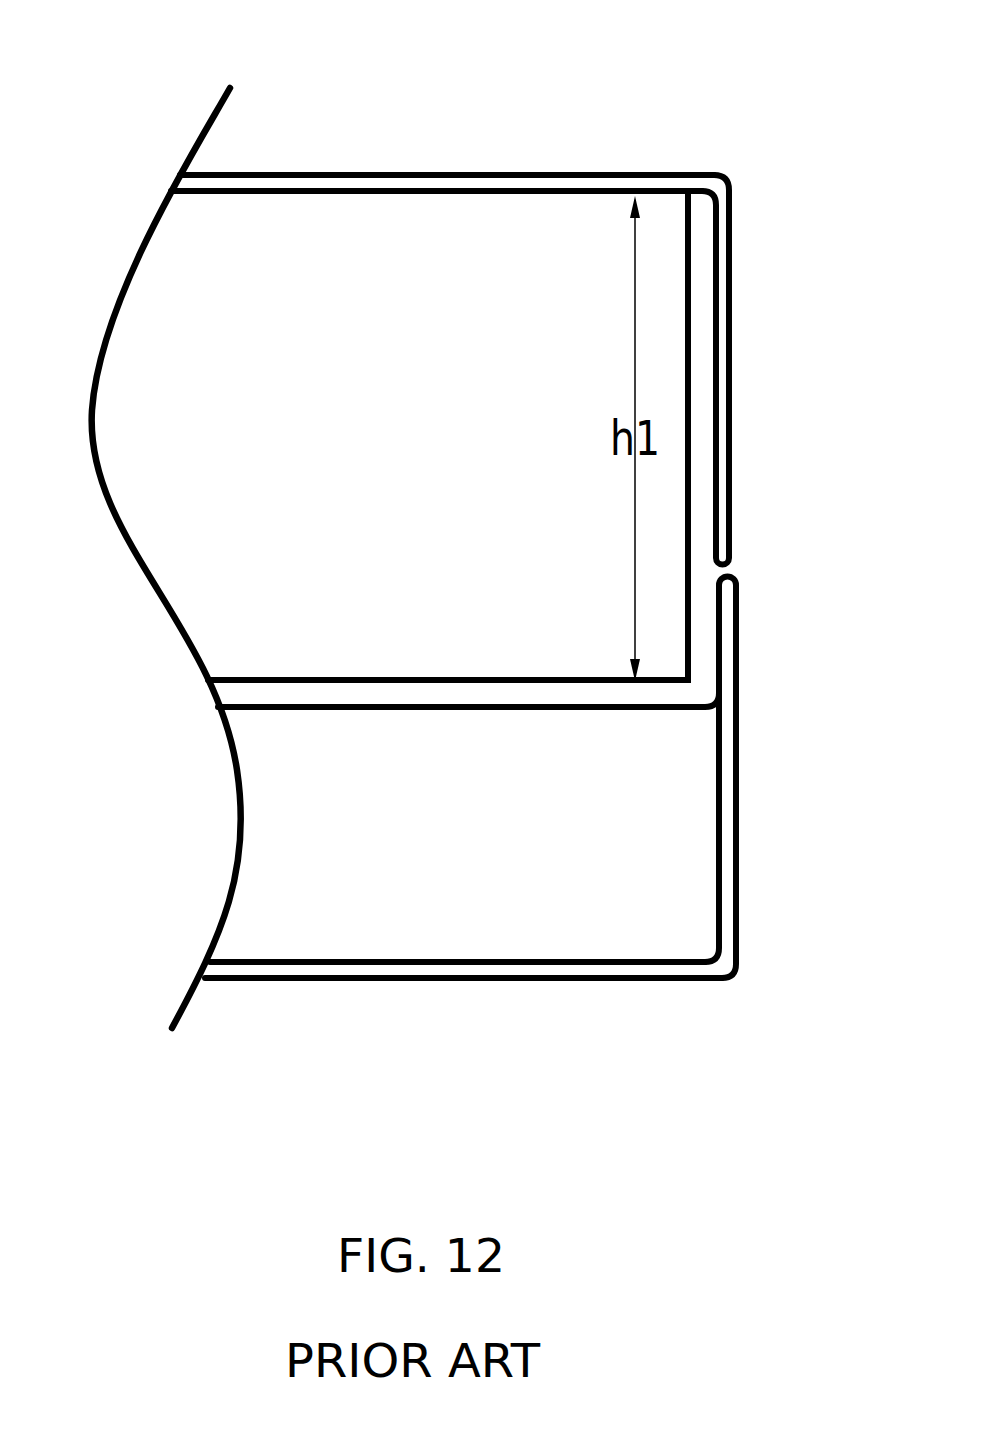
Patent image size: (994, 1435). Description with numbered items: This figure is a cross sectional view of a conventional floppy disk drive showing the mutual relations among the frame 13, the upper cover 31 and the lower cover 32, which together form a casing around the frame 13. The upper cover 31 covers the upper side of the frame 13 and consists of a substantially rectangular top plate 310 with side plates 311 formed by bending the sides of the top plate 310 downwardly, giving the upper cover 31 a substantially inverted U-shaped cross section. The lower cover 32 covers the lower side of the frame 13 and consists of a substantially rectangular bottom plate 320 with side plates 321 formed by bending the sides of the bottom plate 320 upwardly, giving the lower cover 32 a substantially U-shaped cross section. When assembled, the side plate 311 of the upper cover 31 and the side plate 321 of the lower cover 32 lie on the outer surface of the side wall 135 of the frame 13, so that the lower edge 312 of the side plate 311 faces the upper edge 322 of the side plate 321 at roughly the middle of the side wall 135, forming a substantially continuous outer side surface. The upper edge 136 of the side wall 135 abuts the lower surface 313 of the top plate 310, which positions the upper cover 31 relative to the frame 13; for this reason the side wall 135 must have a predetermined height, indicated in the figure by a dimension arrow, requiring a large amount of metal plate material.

The frame 13 is at (293, 650).
The upper cover 31 is at (527, 341).
The top plate 310 is at (460, 172).
The lower surface 313 is at (699, 190).
The side plate 311 is at (733, 331).
The lower edge 312 is at (733, 553).
The side wall 135 is at (690, 512).
The upper edge 136 is at (699, 198).
The lower cover 32 is at (544, 857).
The bottom plate 320 is at (397, 980).
The side plate 321 is at (740, 762).
The upper edge 322 is at (738, 587).